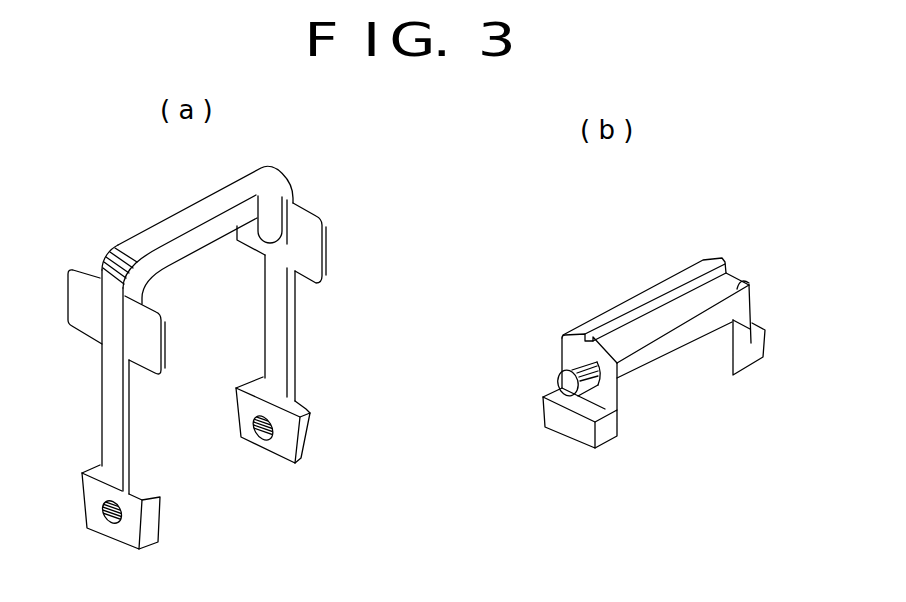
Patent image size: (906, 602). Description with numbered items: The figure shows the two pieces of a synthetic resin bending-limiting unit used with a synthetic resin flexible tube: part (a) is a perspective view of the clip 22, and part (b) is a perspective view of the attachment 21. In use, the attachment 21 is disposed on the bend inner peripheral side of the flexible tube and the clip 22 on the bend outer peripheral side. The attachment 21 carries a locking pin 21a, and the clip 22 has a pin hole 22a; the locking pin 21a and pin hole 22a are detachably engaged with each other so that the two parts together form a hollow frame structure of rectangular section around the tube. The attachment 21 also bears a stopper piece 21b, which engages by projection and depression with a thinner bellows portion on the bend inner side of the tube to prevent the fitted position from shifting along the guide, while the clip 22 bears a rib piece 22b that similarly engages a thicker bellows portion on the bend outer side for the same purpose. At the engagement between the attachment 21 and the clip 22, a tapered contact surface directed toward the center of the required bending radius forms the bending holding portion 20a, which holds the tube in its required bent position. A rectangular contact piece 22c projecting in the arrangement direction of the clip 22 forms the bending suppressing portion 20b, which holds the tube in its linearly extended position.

The bending holding portion 20a is at (307, 435).
The bending suppressing portion 20b is at (323, 278).
The attachment 21 is at (605, 321).
The locking pin 21a is at (497, 370).
The stopper piece 21b is at (653, 295).
The clip 22 is at (218, 374).
The pin hole 22a is at (262, 441).
The rib piece 22b is at (176, 223).
The rectangular contact piece 22c is at (308, 245).